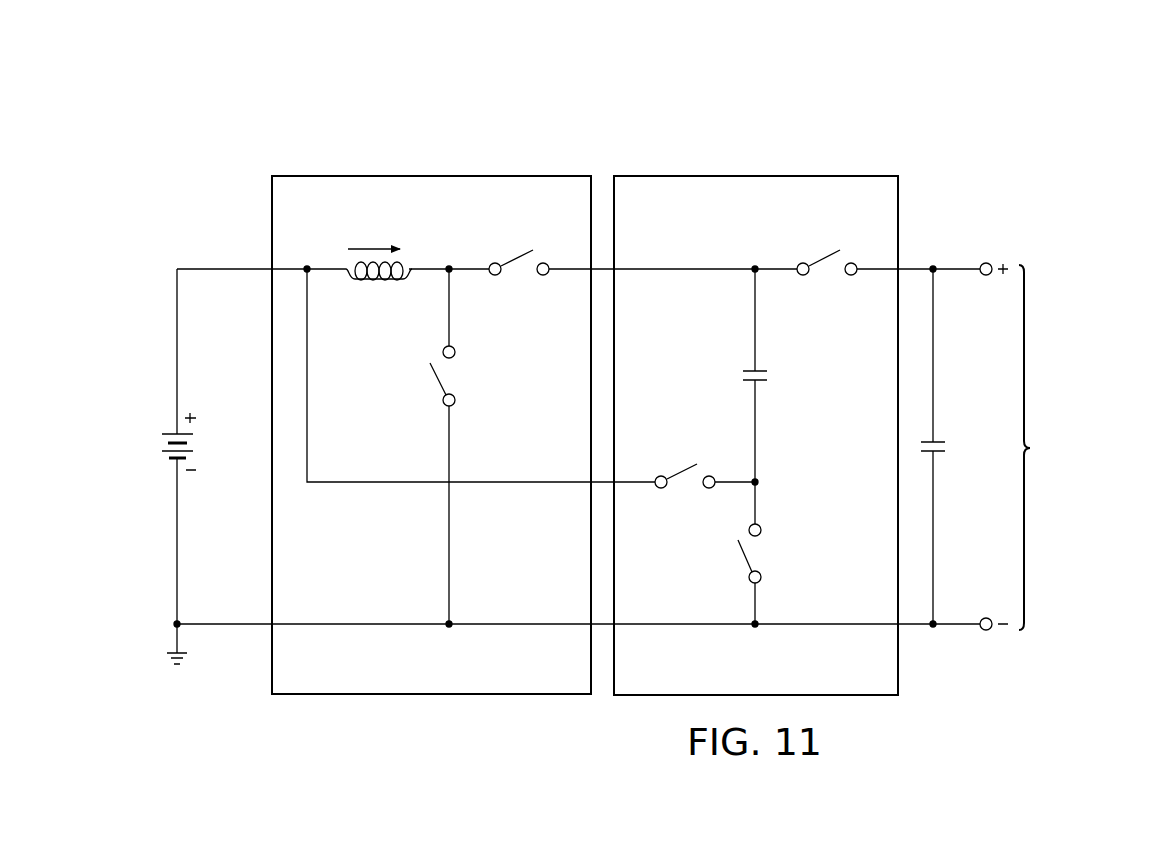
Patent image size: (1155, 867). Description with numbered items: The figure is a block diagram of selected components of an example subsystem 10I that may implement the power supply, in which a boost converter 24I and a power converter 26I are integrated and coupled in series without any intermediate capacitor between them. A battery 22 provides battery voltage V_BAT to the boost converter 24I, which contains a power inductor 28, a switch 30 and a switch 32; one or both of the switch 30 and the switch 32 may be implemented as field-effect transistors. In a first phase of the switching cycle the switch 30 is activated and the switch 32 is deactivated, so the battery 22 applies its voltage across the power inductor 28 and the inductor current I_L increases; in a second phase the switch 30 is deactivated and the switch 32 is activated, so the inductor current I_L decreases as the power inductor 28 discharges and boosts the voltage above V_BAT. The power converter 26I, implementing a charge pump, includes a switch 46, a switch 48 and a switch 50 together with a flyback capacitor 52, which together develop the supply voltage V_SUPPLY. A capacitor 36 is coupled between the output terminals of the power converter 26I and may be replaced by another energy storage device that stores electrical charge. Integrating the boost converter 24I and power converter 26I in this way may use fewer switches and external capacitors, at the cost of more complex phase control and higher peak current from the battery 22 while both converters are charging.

The subsystem 10I is at (996, 100).
The battery 22 is at (160, 441).
The boost converter 24I is at (377, 172).
The power converter 26I is at (817, 171).
The power inductor 28 is at (377, 282).
The switch 30 is at (435, 374).
The switch 32 is at (516, 258).
The capacitor 36 is at (947, 447).
The switch 46 is at (824, 257).
The switch 48 is at (682, 470).
The switch 50 is at (742, 556).
The flyback capacitor 52 is at (770, 378).